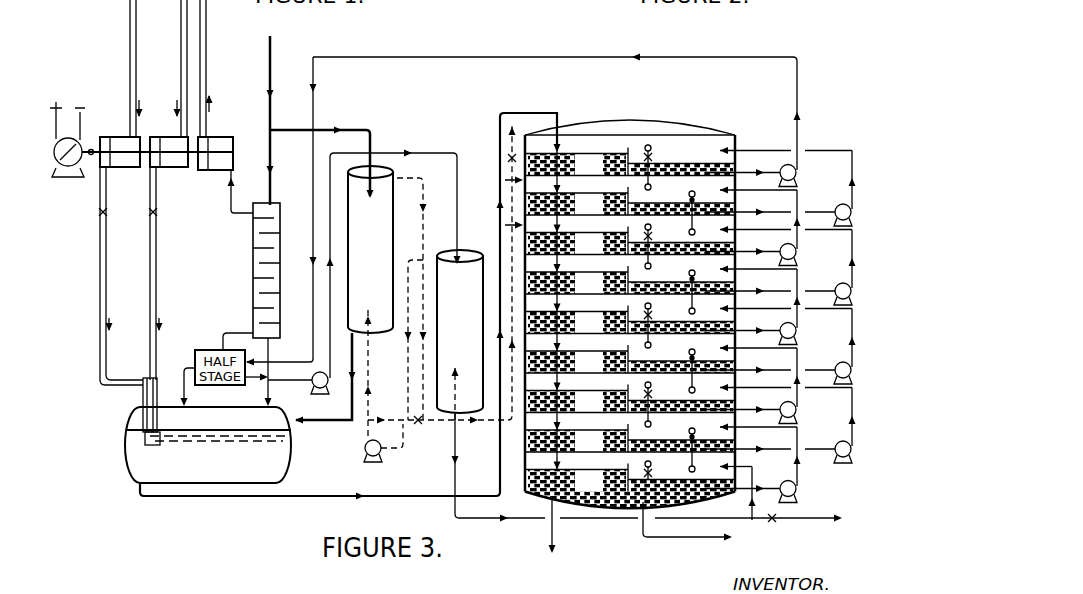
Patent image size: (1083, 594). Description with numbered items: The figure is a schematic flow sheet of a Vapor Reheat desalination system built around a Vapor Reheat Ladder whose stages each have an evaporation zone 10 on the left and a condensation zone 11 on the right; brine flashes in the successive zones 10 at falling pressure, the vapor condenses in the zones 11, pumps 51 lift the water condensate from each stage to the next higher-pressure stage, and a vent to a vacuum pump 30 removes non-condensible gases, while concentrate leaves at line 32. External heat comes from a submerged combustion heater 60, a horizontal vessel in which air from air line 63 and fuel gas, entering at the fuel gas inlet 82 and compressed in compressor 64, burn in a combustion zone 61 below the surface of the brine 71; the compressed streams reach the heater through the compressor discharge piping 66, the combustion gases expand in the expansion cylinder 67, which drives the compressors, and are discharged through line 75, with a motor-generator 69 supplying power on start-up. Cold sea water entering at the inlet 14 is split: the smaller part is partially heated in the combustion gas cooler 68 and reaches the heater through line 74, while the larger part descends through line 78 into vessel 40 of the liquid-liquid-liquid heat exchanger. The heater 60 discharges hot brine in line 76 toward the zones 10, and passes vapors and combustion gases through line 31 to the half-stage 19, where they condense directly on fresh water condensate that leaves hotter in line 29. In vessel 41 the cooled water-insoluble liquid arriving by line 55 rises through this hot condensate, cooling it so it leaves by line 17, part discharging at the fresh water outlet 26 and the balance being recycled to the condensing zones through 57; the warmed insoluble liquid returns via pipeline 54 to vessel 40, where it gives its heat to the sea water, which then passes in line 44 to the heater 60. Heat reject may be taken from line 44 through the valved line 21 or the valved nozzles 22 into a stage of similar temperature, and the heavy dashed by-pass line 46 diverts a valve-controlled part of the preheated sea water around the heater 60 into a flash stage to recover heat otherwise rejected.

The evaporation zone 10 is at (572, 132).
The condensation zone 11 is at (735, 137).
The sea water inlet 14 is at (270, 36).
The fresh water line 17 is at (456, 482).
The half-stage 19 is at (210, 350).
The valved line 21 is at (505, 145).
The valved nozzles 22 is at (518, 224).
The fresh water discharge 26 is at (793, 521).
The hot condensate line 29 is at (458, 162).
The vent to vacuum pump 30 is at (766, 98).
The combustion gas and vapor line 31 is at (182, 366).
The concentrate outlet line 32 is at (553, 556).
The heat exchanger vessel 40 is at (378, 212).
The heat exchanger vessel 41 is at (466, 258).
The preheated sea water line 44 is at (325, 378).
The by-pass line 46 is at (440, 289).
The pumps 51 is at (838, 284).
The water-insoluble liquid pipeline 54 is at (411, 386).
The cooled water-insoluble liquid line 55 is at (423, 299).
The condensate recycle line 57 is at (757, 484).
The submerged combustion heater 60 is at (125, 449).
The combustion zone 61 is at (140, 408).
The air line 63 is at (130, 48).
The compressor 64 is at (175, 168).
The compressor discharge line 66 is at (191, 190).
The expansion cylinder 67 is at (234, 161).
The combustion gas cooler 68 is at (253, 291).
The motor-generator 69 is at (90, 172).
The brine surface 71 is at (162, 446).
The sea water supply line 74 is at (271, 372).
The combustion gas discharge line 75 is at (203, 137).
The hot brine discharge line 76 is at (384, 496).
The cold sea water line 78 is at (292, 211).
The fuel gas inlet 82 is at (182, 137).